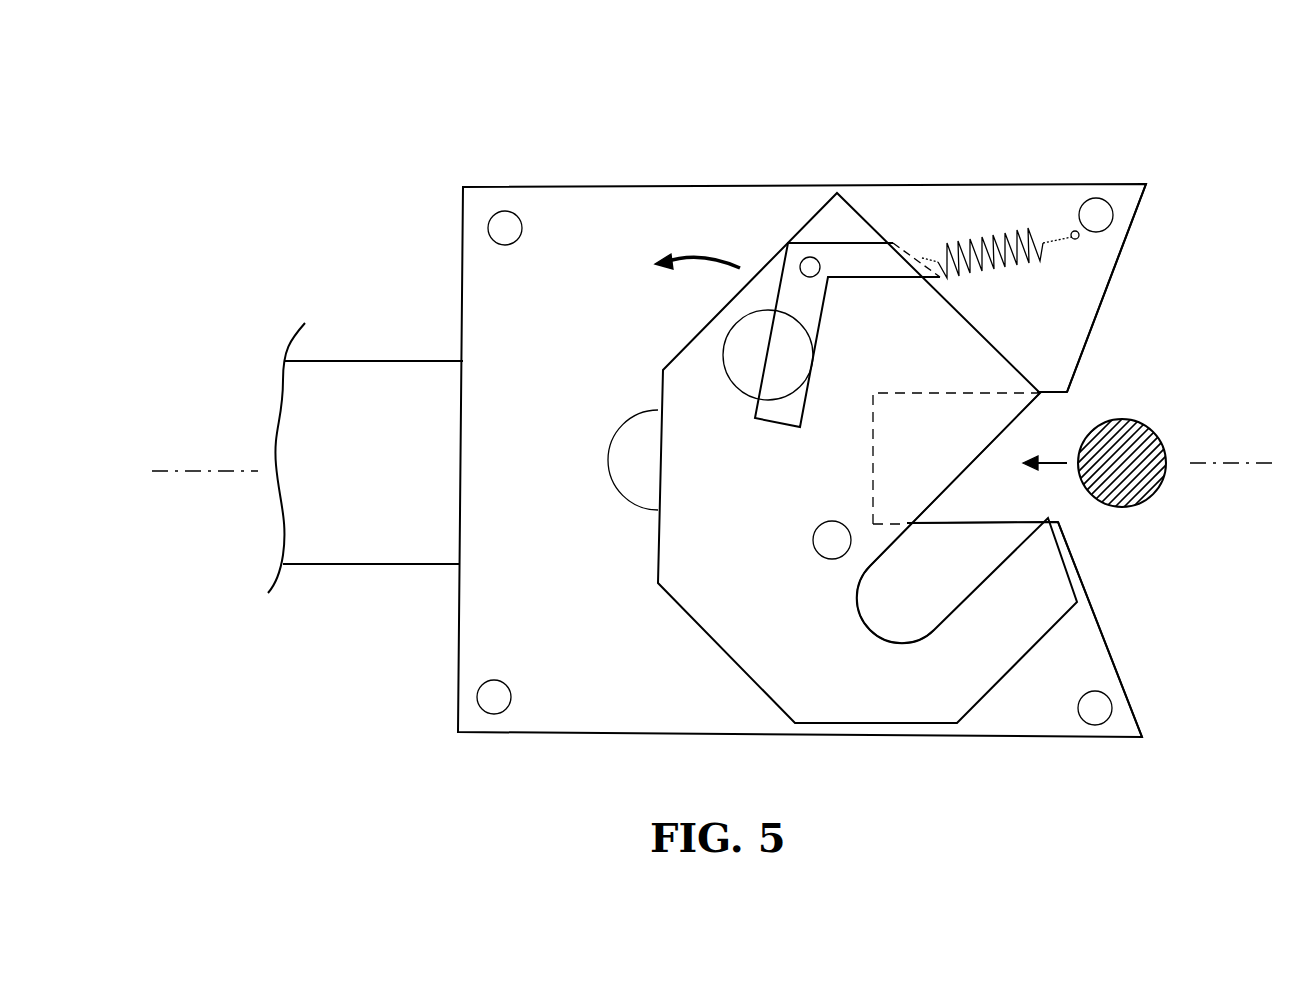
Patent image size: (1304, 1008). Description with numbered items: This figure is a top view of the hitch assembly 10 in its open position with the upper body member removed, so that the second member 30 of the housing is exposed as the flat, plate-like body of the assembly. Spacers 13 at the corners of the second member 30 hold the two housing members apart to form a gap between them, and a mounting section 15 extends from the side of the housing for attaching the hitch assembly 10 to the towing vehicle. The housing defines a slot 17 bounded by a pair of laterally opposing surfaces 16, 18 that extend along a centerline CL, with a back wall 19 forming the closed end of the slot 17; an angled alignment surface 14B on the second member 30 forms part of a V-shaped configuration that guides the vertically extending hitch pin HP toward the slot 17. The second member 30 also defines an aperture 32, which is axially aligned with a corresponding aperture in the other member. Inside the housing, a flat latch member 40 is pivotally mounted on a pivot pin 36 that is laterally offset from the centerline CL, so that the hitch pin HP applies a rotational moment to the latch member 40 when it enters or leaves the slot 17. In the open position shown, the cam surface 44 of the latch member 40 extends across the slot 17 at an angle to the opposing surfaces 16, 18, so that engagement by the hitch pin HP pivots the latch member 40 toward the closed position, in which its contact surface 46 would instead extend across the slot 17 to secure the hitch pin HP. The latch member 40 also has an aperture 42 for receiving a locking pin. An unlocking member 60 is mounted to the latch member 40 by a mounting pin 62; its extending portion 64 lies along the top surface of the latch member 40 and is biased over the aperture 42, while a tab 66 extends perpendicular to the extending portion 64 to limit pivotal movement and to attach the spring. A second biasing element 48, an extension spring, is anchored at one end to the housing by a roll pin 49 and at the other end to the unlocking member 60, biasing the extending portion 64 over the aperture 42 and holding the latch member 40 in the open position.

The hitch assembly 10 is at (1127, 146).
The spacers 13 is at (500, 222).
The alignment surface 14B is at (1102, 300).
The mounting section 15 is at (392, 548).
The opposing surface 16 is at (1063, 522).
The slot 17 is at (1024, 468).
The opposing surface 18 is at (1040, 393).
The back wall 19 is at (883, 480).
The second member 30 is at (1122, 212).
The aperture 32 is at (630, 505).
The pivot pin 36 is at (828, 548).
The latch member 40 is at (730, 615).
The aperture 42 is at (724, 345).
The cam surface 44 is at (935, 495).
The contact surface 46 is at (973, 593).
The second biasing element 48 is at (1003, 262).
The roll pin 49 is at (1078, 243).
The unlocking member 60 is at (787, 297).
The mounting pin 62 is at (805, 258).
The extending portion 64 is at (793, 363).
The tab 66 is at (914, 255).
The hitch pin HP is at (1155, 450).
The centerline CL is at (1212, 468).